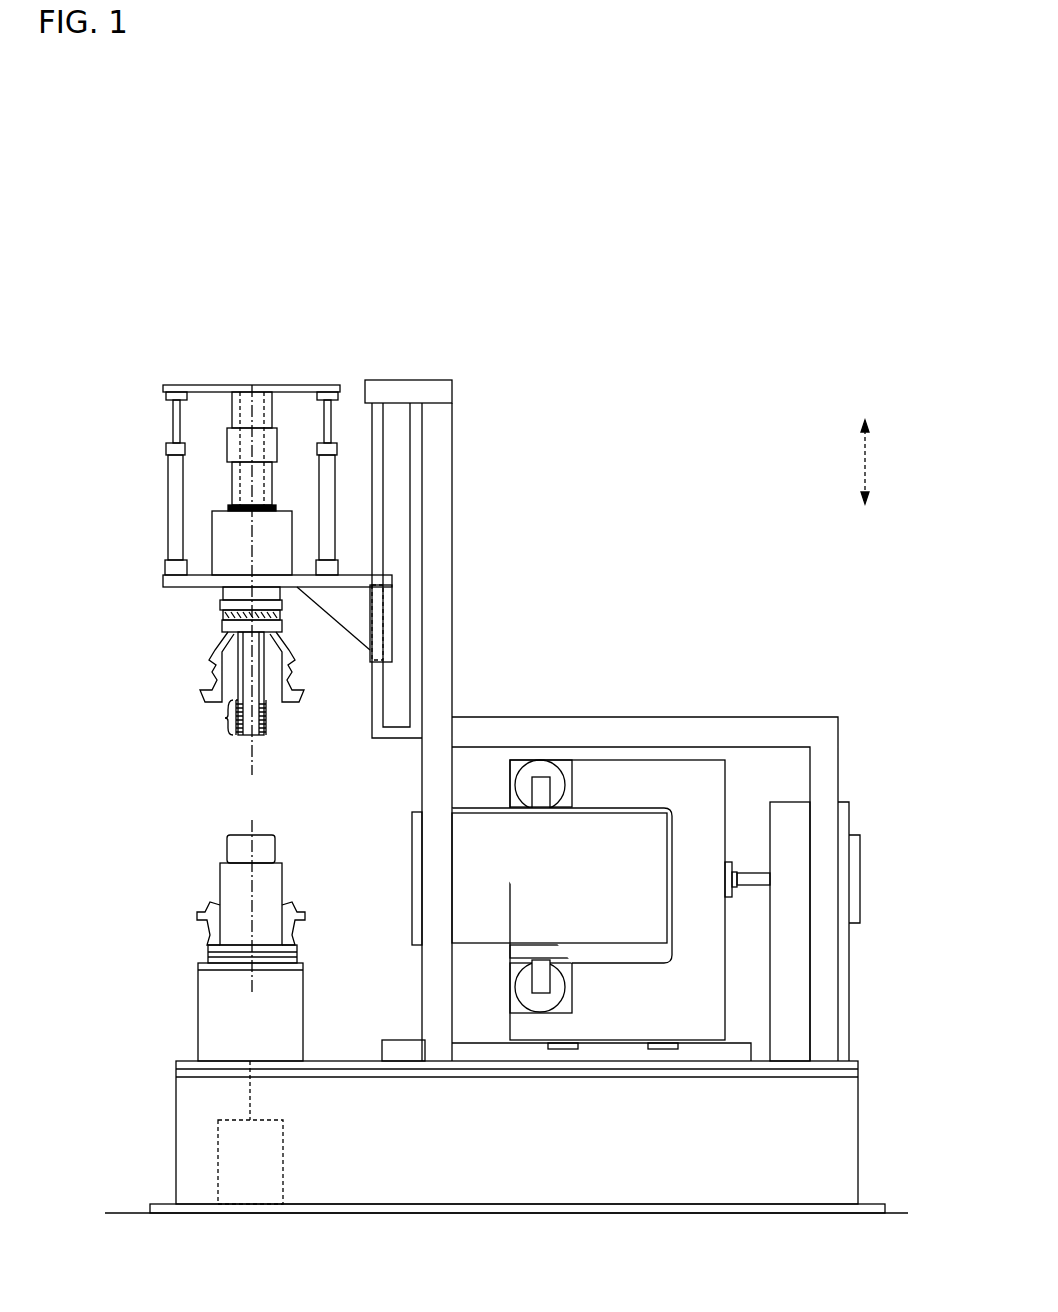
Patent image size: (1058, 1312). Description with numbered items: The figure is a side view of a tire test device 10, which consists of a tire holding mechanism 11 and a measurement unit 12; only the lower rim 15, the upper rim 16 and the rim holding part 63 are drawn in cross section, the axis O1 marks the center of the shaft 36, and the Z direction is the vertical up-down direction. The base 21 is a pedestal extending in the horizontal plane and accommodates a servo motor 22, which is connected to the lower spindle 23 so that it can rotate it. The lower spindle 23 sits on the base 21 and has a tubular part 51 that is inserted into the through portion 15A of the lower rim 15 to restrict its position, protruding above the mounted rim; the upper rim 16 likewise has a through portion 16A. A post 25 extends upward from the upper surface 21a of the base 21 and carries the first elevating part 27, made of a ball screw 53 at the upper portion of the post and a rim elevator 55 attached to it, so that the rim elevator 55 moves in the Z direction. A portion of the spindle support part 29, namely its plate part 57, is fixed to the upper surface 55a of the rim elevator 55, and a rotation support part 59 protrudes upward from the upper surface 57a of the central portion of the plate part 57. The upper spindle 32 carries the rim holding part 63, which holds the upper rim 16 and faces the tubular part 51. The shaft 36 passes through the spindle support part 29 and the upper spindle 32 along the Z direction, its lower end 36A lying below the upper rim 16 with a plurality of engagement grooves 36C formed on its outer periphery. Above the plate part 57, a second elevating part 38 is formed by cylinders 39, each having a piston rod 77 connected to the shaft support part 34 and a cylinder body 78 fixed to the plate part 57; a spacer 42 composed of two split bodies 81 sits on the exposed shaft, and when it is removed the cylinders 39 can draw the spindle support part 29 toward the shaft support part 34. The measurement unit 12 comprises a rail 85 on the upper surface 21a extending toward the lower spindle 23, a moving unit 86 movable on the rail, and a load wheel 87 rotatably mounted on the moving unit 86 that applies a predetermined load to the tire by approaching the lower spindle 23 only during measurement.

The tire test device 10 is at (148, 108).
The tire holding mechanism 11 is at (216, 501).
The measurement unit 12 is at (636, 854).
The lower rim 15 is at (211, 899).
The through portion 15A is at (230, 928).
The upper rim 16 is at (203, 699).
The through portion 16A is at (227, 692).
The base 21 is at (506, 1092).
The upper surface 21a is at (330, 1061).
The servo motor 22 is at (218, 1168).
The lower spindle 23 is at (255, 938).
The post 25 is at (451, 720).
The first elevating part 27 is at (221, 501).
The spindle support part 29 is at (162, 584).
The upper spindle 32 is at (212, 606).
The shaft support part 34 is at (195, 380).
The shaft 36 is at (238, 603).
The lower end 36A is at (205, 727).
The engagement groove 36C is at (272, 728).
The second elevating part 38 is at (197, 407).
The cylinder 39 is at (202, 407).
The spacer 42 is at (232, 346).
The tubular part 51 is at (240, 876).
The ball screw 53 is at (378, 437).
The rim elevator 55 is at (418, 578).
The upper surface 55a is at (302, 573).
The plate part 57 is at (176, 522).
The upper surface 57a is at (205, 572).
The rotation support part 59 is at (225, 557).
The rim holding part 63 is at (210, 647).
The piston rod 77 is at (333, 497).
The cylinder body 78 is at (343, 500).
The split body 81 is at (230, 446).
The rail 85 is at (395, 1040).
The moving unit 86 is at (698, 775).
The load wheel 87 is at (630, 827).
The axis O1 is at (254, 770).
The Z direction Z is at (871, 462).